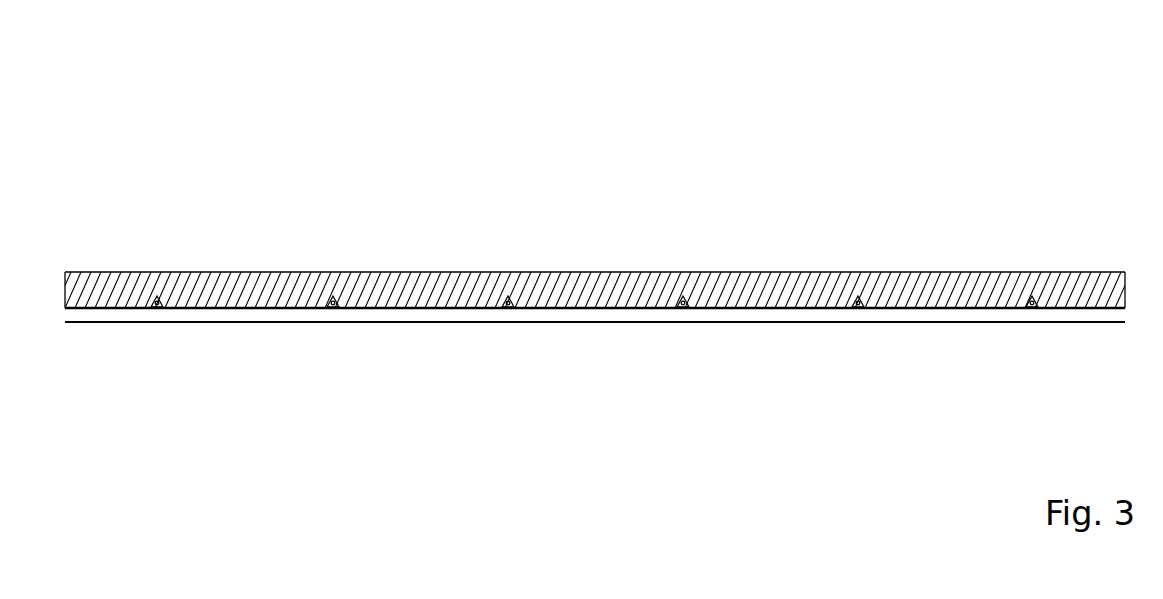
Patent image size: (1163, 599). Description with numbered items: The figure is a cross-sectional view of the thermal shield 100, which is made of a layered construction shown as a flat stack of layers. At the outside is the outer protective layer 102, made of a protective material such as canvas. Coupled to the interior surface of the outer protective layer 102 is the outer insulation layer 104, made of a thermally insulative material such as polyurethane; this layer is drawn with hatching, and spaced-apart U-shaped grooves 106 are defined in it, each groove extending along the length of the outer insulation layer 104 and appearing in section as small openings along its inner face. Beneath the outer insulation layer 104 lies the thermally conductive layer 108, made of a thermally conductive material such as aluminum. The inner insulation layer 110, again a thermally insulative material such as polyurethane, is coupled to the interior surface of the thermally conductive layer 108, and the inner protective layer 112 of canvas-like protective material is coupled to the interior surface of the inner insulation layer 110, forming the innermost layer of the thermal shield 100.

The thermal shield 100 is at (1107, 112).
The outer protective layer 102 is at (420, 272).
The outer insulation layer 104 is at (573, 282).
The U-shaped grooves 106 is at (510, 297).
The thermally conductive layer 108 is at (605, 310).
The inner insulation layer 110 is at (705, 315).
The inner protective layer 112 is at (762, 322).